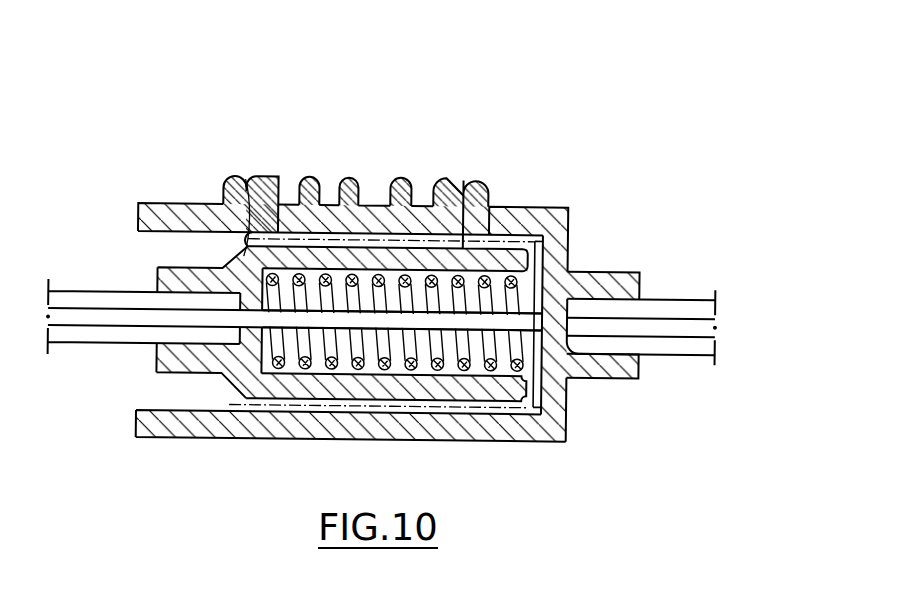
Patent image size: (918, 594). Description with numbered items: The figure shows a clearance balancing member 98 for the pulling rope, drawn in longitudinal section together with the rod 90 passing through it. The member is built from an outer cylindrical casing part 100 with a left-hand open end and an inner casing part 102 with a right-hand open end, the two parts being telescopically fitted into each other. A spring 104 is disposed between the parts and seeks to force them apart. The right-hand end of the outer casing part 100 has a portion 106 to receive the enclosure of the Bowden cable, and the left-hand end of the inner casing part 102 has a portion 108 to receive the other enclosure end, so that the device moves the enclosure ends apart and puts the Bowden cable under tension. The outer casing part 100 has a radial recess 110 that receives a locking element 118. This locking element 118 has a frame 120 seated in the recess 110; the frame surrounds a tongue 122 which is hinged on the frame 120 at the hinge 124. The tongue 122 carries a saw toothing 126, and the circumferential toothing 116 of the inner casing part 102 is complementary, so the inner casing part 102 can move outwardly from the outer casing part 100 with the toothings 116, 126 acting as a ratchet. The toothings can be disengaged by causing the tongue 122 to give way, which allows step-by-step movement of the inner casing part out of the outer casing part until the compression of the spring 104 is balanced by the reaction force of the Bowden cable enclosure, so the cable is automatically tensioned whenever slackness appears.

The output rod 90 is at (687, 327).
The clearance balancing member 98 is at (526, 200).
The outer cylindrical casing part 100 is at (563, 199).
The inner casing part 102 is at (226, 383).
The spring 104 is at (526, 364).
The portion 106 is at (610, 272).
The portion 108 is at (157, 268).
The radial recess 110 is at (463, 192).
The circumferential toothing 116 is at (231, 176).
The locking element 118 is at (332, 168).
The frame 120 is at (273, 174).
The tongue 122 is at (364, 184).
The hinge 124 is at (420, 206).
The saw toothing 126 is at (298, 174).